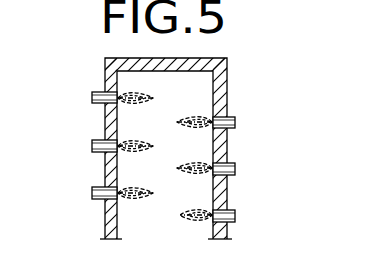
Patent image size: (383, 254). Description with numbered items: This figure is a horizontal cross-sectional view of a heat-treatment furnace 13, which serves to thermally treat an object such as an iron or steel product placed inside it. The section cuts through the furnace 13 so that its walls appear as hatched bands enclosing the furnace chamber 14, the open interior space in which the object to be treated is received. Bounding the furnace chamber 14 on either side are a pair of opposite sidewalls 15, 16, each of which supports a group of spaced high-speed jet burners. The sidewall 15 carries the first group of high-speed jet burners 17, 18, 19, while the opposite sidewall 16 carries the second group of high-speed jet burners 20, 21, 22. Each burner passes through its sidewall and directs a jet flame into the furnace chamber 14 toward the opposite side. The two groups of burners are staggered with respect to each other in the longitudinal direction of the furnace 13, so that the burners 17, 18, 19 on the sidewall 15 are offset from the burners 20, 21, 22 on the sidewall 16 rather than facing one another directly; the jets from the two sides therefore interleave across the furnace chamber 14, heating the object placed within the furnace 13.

The heat-treatment furnace 13 is at (230, 69).
The furnace chamber 14 is at (195, 87).
The sidewall 15 is at (227, 112).
The sidewall 16 is at (105, 73).
The high-speed jet burner 17 is at (235, 220).
The high-speed jet burner 18 is at (235, 173).
The high-speed jet burner 19 is at (235, 125).
The high-speed jet burner 20 is at (93, 199).
The high-speed jet burner 21 is at (93, 151).
The high-speed jet burner 22 is at (92, 99).